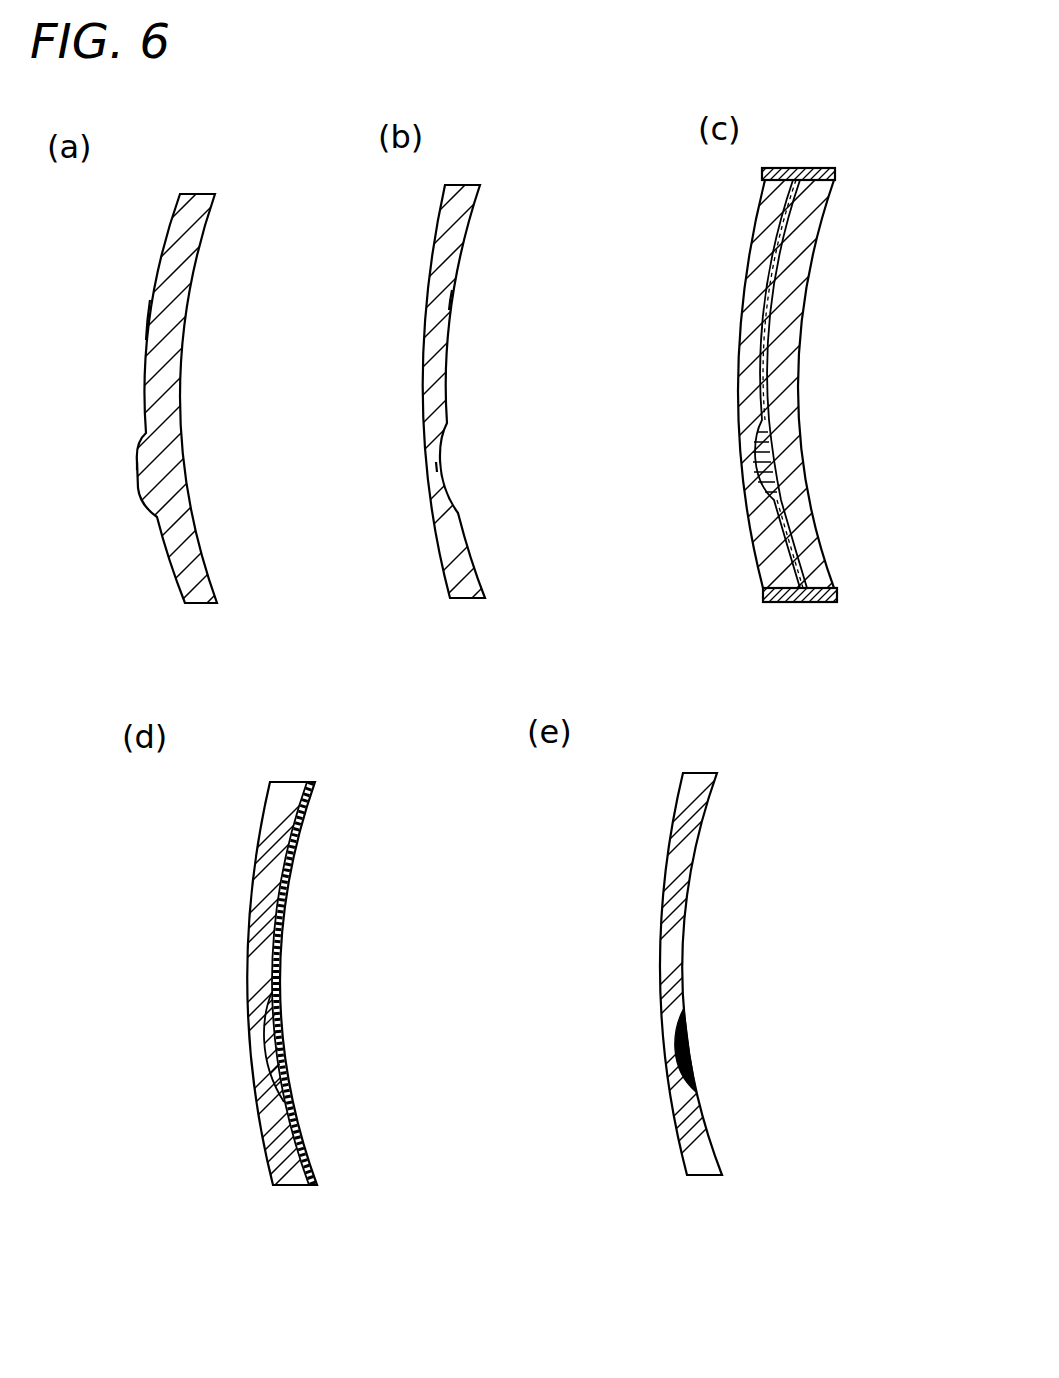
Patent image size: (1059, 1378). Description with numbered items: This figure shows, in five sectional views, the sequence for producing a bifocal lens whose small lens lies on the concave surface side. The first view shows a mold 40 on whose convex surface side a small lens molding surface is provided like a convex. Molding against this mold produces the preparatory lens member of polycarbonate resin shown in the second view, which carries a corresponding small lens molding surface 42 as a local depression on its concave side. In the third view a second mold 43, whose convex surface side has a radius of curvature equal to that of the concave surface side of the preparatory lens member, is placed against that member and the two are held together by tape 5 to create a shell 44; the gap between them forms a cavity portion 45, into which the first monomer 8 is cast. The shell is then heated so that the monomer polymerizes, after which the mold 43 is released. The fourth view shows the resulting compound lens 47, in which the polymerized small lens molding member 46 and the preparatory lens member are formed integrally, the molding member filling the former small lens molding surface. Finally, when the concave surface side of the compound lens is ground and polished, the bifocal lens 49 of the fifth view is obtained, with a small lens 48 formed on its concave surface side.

The mold 40 is at (160, 357).
The small lens molding surface 42 is at (458, 493).
The mold 43 is at (790, 300).
The shell 44 is at (529, 650).
The cavity portion 45 is at (773, 485).
The tape 5 is at (778, 168).
The first monomer 8 is at (765, 450).
The small lens molding member 46 is at (278, 1038).
The compound lens 47 is at (529, 650).
The small lens 48 is at (688, 1053).
The bifocal lens 49 is at (627, 650).